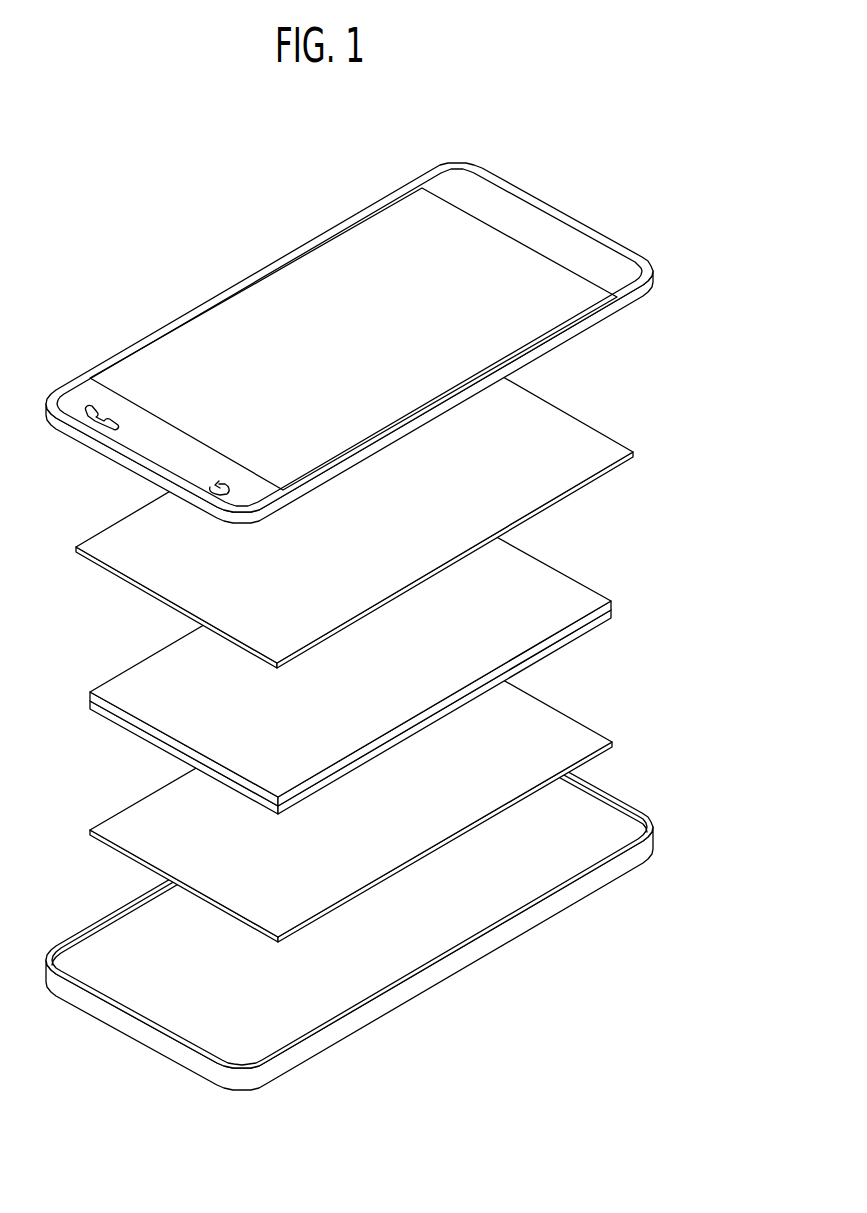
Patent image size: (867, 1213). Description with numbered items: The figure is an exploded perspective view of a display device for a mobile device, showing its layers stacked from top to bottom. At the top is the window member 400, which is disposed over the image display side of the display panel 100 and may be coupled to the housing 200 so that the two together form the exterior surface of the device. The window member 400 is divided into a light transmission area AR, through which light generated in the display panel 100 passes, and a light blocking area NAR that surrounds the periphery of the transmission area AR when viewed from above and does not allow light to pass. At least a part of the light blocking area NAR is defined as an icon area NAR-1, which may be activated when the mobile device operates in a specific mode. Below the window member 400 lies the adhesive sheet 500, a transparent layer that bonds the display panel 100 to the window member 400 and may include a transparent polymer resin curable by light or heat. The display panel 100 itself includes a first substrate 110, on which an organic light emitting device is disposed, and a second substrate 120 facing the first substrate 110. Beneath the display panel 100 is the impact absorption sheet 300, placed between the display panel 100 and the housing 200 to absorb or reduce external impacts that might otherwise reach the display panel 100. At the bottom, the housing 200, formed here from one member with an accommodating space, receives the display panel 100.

The display panel 100 is at (406, 655).
The first substrate 110 is at (610, 617).
The second substrate 120 is at (590, 595).
The housing 200 is at (503, 934).
The impact absorption sheet 300 is at (556, 732).
The window member 400 is at (349, 326).
The adhesive sheet 500 is at (568, 432).
The light transmission area AR is at (330, 258).
The light blocking area NAR is at (496, 204).
The icon area NAR-1 is at (106, 414).